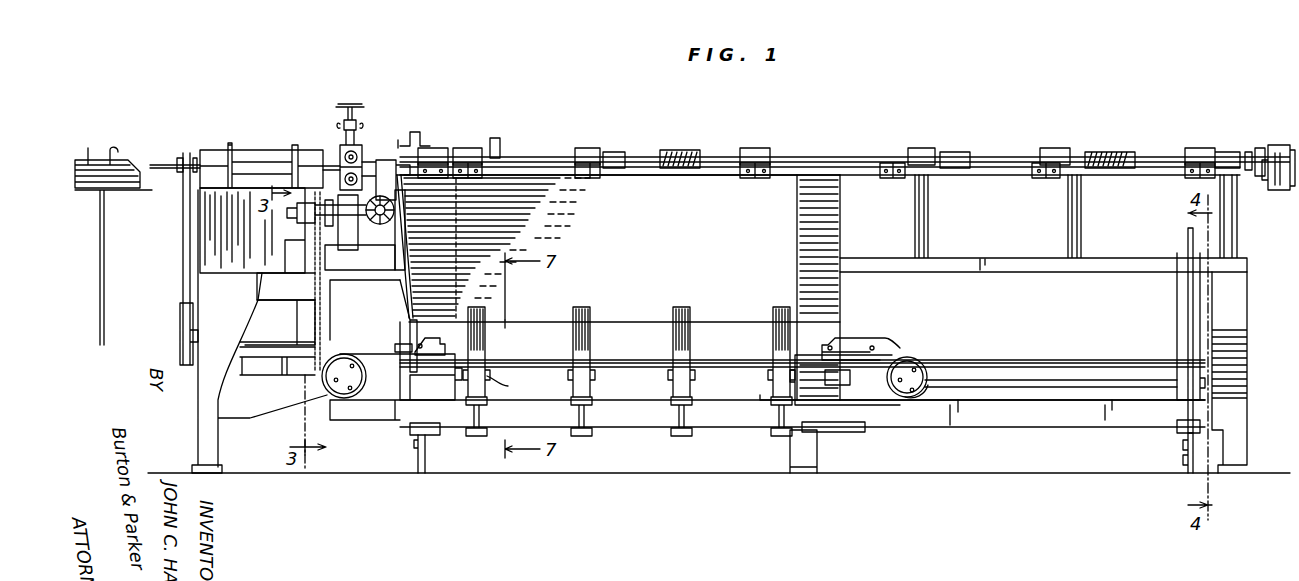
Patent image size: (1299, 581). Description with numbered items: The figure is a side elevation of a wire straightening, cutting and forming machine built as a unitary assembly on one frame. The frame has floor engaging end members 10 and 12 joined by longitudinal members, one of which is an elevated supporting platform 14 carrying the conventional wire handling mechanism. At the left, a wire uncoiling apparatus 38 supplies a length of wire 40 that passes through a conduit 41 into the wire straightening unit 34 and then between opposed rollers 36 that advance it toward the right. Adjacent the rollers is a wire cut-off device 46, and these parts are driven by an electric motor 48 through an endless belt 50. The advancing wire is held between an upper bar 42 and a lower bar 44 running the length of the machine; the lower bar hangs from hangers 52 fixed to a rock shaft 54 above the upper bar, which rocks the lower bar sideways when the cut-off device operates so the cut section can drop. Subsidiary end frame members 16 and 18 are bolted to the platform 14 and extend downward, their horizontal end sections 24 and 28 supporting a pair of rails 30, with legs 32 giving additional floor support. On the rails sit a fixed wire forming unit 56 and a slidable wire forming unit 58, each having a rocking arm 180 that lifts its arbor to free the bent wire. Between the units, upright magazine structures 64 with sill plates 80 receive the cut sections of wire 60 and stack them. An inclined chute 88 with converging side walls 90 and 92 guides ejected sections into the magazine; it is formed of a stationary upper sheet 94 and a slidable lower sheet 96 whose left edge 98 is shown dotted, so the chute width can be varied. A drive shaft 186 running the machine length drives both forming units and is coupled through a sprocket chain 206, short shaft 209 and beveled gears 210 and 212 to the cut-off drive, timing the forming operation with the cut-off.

The floor engaging end member 10 is at (210, 400).
The floor engaging end member 12 is at (1236, 433).
The supporting frame member or platform 14 is at (1005, 266).
The subsidiary end supporting frame member 16 is at (372, 308).
The subsidiary end supporting frame member 18 is at (1182, 313).
The horizontal end section 24 is at (410, 430).
The horizontal end section 28 is at (1180, 431).
The rails 30 is at (1068, 419).
The legs 32 is at (418, 462).
The wire conditioning and straightening unit 34 is at (254, 157).
The opposed rollers 36 is at (340, 145).
The wire uncoiling apparatus 38 is at (118, 190).
The wire 40 is at (165, 163).
The conduit 41 is at (186, 155).
The upper bar 42 is at (965, 158).
The lower bar 44 is at (997, 190).
The wire cut-off device 46 is at (386, 162).
The electric motor 48 is at (284, 329).
The endless belt 50 is at (182, 277).
The hangers 52 is at (742, 179).
The rock shaft 54 is at (822, 157).
The wire forming unit 56 is at (402, 393).
The wire forming unit 58 is at (872, 396).
The cut sections of wire 60 is at (636, 359).
The upright magazine structure 64 is at (600, 285).
The plate 80 is at (512, 385).
The inclined trough or chute 88 is at (692, 242).
The side wall 90 is at (413, 282).
The side wall 92 is at (845, 246).
The upper sheet 94 is at (716, 321).
The lower sheet 96 is at (840, 300).
The left edge of lower sheet 98 is at (545, 240).
The rocking arm 180 is at (405, 345).
The drive shaft 186 is at (1052, 381).
The endless sprocket chain 206 is at (314, 287).
The horizontal shaft 209 is at (355, 228).
The beveled gear 210 is at (384, 232).
The beveled gear 212 is at (392, 228).